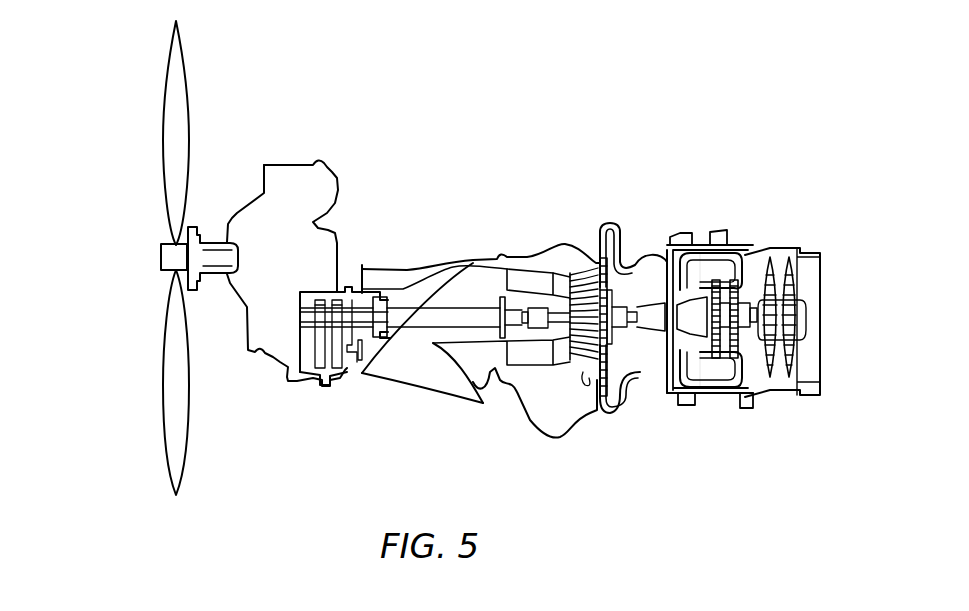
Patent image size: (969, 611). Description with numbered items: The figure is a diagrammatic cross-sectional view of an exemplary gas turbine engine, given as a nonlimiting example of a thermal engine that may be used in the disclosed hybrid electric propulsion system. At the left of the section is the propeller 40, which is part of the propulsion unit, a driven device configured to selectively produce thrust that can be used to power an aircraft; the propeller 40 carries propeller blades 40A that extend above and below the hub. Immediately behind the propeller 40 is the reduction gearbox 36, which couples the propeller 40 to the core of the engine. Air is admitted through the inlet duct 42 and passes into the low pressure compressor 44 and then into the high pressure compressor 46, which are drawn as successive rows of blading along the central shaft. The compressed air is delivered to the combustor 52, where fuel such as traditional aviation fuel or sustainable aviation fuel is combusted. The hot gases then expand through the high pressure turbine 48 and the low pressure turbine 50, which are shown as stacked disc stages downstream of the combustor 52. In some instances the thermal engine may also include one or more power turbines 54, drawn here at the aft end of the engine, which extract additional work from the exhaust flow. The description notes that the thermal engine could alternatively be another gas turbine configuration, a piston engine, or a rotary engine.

The reduction gearbox 36 is at (279, 381).
The propeller 40 is at (131, 258).
The propeller blades 40A is at (163, 103).
The inlet duct 42 is at (428, 392).
The low pressure compressor 44 is at (561, 262).
The high pressure compressor 46 is at (652, 272).
The high pressure turbine 48 is at (705, 270).
The low pressure turbine 50 is at (748, 275).
The combustor 52 is at (717, 380).
The power turbine 54 is at (773, 257).